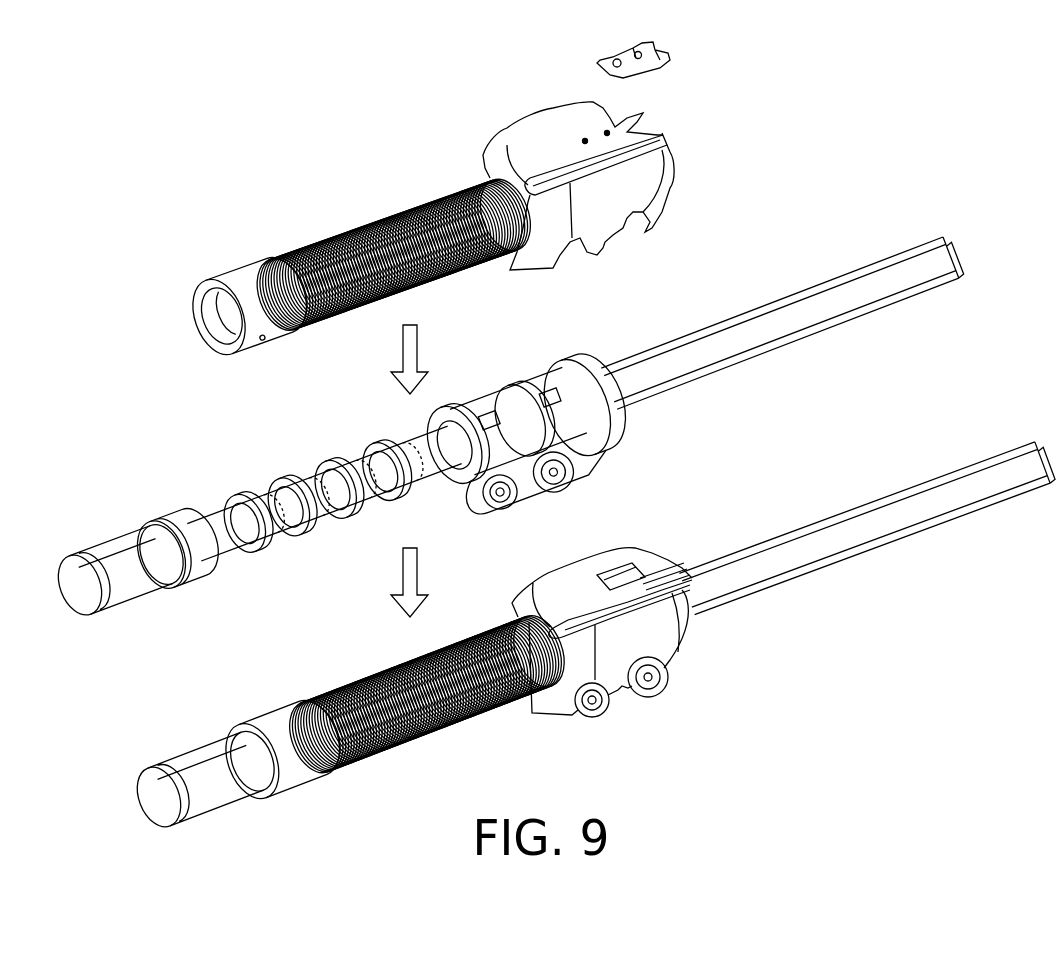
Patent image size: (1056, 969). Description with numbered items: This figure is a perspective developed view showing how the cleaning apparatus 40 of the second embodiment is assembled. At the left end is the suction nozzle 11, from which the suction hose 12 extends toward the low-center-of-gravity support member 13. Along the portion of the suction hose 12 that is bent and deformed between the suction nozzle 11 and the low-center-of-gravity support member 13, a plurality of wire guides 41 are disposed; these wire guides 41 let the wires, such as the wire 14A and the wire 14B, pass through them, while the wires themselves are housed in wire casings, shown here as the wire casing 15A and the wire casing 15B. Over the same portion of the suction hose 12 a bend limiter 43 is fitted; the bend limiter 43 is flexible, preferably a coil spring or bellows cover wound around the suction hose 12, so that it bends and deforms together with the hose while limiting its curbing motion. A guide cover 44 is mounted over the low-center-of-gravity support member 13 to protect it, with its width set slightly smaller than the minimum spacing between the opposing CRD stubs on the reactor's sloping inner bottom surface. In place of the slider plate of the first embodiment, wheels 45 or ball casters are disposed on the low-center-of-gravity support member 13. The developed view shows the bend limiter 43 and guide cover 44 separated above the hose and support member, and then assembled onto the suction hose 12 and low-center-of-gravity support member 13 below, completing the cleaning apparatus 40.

The suction nozzle 11 is at (102, 553).
The suction hose 12 is at (805, 318).
The low-center-of-gravity support member 13 is at (518, 358).
The wire 14A is at (212, 507).
The wire 14B is at (323, 536).
The wire casing 15A is at (698, 335).
The wire casing 15B is at (718, 380).
The cleaning apparatus 40 is at (856, 460).
The wire guide 41 is at (296, 474).
The bend limiter 43 is at (360, 228).
The guide cover 44 is at (540, 130).
The wheel 45 is at (502, 508).